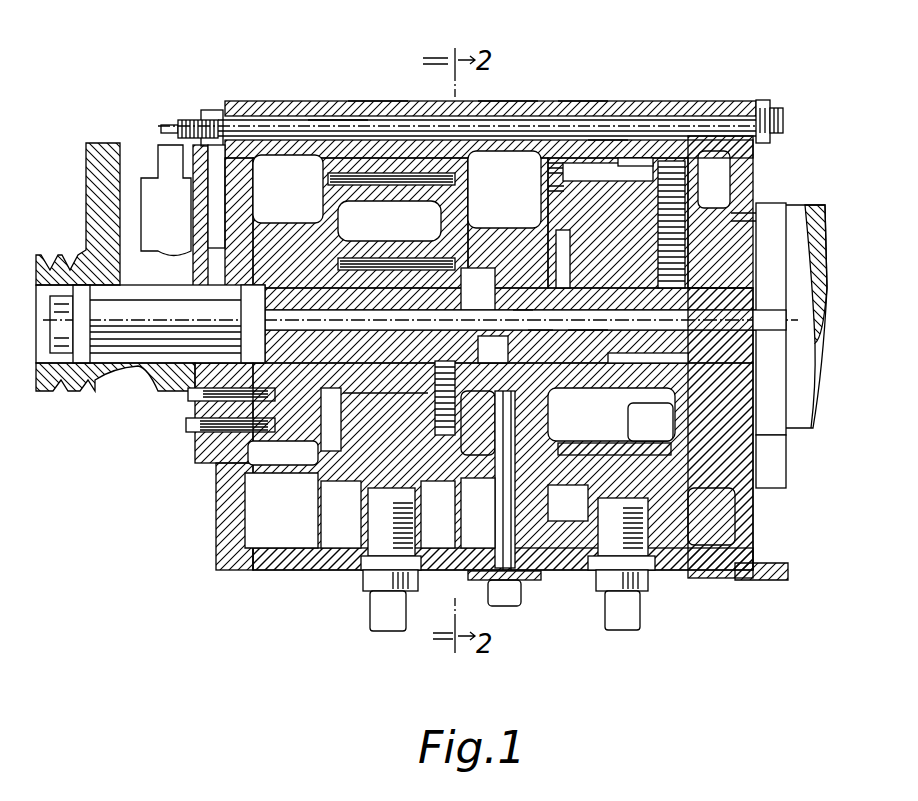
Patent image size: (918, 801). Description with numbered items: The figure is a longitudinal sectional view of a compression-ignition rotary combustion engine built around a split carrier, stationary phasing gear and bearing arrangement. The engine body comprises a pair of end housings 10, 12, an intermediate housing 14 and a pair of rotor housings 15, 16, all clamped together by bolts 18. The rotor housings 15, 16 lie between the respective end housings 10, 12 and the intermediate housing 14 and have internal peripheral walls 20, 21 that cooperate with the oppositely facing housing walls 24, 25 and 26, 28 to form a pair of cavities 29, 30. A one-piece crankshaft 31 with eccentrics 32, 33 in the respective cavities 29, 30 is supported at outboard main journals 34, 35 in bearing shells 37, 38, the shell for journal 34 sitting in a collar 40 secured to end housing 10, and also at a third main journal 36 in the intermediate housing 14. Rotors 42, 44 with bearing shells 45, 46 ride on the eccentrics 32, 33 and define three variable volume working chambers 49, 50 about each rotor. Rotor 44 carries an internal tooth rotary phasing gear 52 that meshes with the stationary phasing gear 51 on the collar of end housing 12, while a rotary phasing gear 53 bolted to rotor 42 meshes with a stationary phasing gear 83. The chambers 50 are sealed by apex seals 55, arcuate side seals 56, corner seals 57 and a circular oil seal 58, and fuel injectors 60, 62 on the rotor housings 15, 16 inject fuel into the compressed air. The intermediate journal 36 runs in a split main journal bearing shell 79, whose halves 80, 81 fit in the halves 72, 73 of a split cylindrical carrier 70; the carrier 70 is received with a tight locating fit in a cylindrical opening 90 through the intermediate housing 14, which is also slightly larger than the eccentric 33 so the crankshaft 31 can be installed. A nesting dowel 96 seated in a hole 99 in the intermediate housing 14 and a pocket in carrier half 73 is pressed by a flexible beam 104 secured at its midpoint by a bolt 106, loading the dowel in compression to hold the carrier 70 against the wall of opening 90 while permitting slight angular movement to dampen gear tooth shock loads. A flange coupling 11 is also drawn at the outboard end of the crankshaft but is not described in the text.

The end housing 10 is at (265, 97).
The flange coupling 11 is at (725, 252).
The end housing 12 is at (692, 95).
The intermediate housing 14 is at (500, 97).
The rotor housing 15 is at (373, 97).
The rotor housing 16 is at (570, 95).
The bolts 18 is at (330, 112).
The internal peripheral wall 20 is at (348, 165).
The internal peripheral wall 21 is at (592, 150).
The housing wall 24 is at (325, 185).
The housing wall 25 is at (470, 123).
The housing wall 26 is at (552, 208).
The housing wall 28 is at (662, 185).
The cavity 29 is at (305, 435).
The cavity 30 is at (558, 232).
The one-piece crankshaft 31 is at (135, 330).
The eccentric 32 is at (348, 392).
The eccentric 33 is at (660, 292).
The main journal 34 is at (190, 322).
The main journal 35 is at (742, 322).
The third main journal 36 is at (517, 479).
The bearing shell 37 is at (200, 392).
The bearing shell 38 is at (745, 370).
The collar 40 is at (350, 430).
The rotor 42 is at (425, 505).
The rotor 44 is at (680, 465).
The bearing shell 45 is at (345, 505).
The bearing shell 46 is at (625, 382).
The working chambers 49 is at (440, 480).
The working chambers 50 is at (640, 122).
The stationary phasing gear 51 is at (642, 357).
The rotary phasing gear 52 is at (690, 200).
The rotary phasing gear 53 is at (435, 240).
The apex seals 55 is at (572, 555).
The side seals 56 is at (545, 162).
The corner seals 57 is at (585, 437).
The oil seal 58 is at (545, 183).
The fuel injector 60 is at (382, 612).
The fuel injector 62 is at (620, 612).
The split cylindrical carrier 70 is at (553, 275).
The carrier half 72 is at (588, 321).
The carrier half 73 is at (528, 345).
The split main journal bearing shell 79 is at (515, 305).
The bearing shell half 80 is at (479, 290).
The bearing shell half 81 is at (490, 395).
The stationary phasing gear 83 is at (425, 370).
The cylindrical opening 90 is at (460, 250).
The nesting dowel 96 is at (475, 513).
The hole 99 is at (498, 500).
The flexible beam 104 is at (527, 572).
The bolt 106 is at (497, 595).